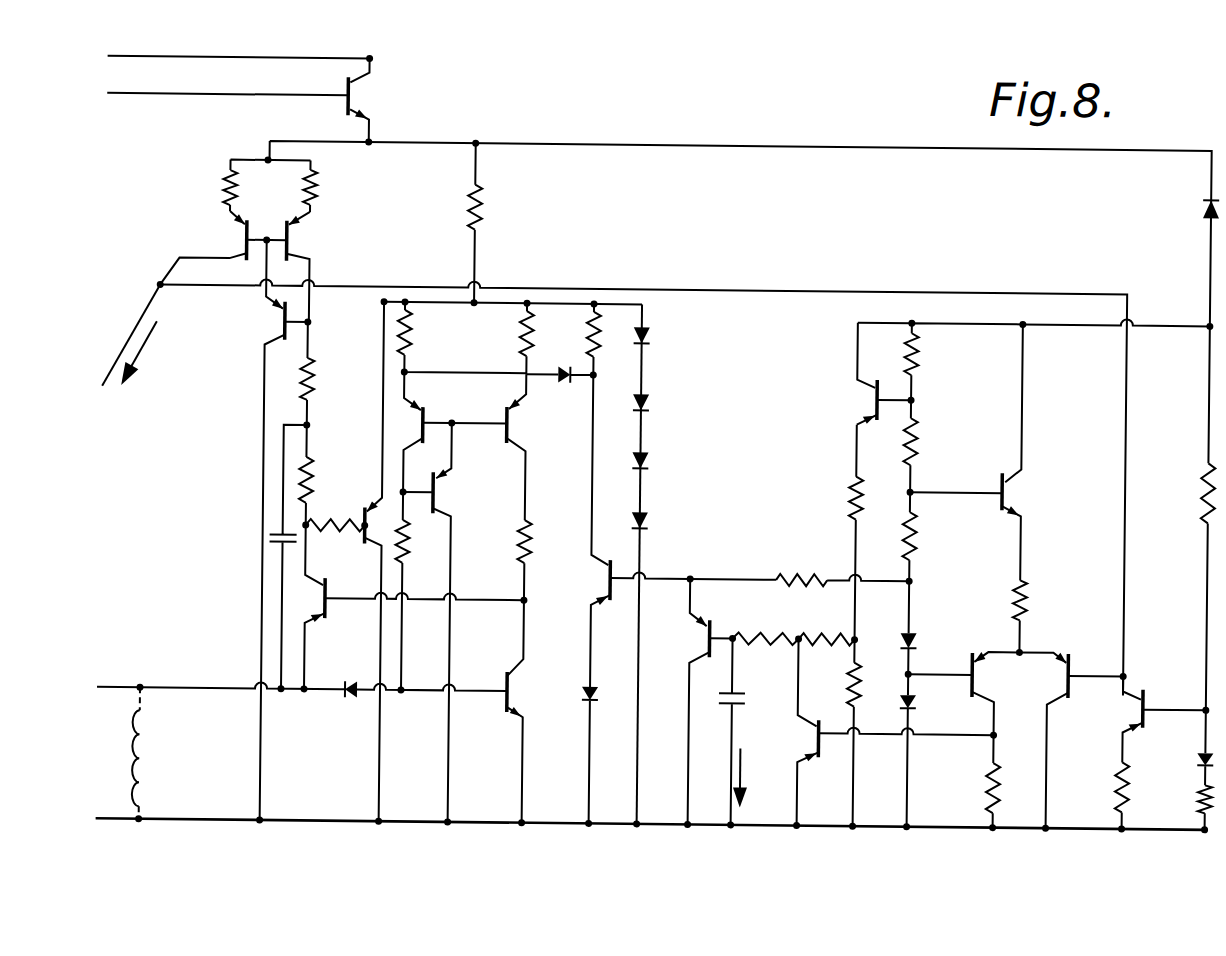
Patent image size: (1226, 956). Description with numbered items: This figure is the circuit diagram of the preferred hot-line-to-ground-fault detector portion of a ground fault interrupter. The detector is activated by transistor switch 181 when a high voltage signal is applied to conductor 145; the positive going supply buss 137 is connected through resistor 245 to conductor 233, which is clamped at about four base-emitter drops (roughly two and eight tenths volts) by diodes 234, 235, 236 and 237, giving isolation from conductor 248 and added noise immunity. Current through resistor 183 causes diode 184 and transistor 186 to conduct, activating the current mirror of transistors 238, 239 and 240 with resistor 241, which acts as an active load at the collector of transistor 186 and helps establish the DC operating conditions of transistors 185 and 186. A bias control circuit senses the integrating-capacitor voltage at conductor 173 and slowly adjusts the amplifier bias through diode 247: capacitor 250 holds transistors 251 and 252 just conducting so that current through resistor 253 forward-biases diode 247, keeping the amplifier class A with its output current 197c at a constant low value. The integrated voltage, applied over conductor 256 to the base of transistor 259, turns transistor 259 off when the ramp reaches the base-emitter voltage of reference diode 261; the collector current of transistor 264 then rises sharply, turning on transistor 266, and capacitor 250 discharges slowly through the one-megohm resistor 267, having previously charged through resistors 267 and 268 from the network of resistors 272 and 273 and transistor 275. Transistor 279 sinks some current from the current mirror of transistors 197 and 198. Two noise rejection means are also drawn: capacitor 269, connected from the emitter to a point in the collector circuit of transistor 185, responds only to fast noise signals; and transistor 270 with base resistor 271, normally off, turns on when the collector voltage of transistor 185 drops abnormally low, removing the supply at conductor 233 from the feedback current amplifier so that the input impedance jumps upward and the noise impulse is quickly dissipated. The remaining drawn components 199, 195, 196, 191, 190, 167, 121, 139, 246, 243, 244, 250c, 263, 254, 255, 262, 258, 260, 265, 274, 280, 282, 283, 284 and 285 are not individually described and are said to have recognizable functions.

The positive going supply buss 137 is at (202, 66).
The conductor 145 is at (238, 100).
The transistor switch 181 is at (370, 100).
The conductor 248 is at (852, 142).
The resistor 199 is at (224, 194).
The transistor 198 is at (312, 198).
The transistor 197 is at (240, 242).
The transistor 195 is at (290, 244).
The conductor 173 is at (130, 342).
The output current 197c is at (145, 350).
The conductor 256 is at (786, 292).
The transistor 196 is at (282, 328).
The resistor 191 is at (310, 390).
The capacitor 269 is at (268, 542).
The resistor 190 is at (314, 470).
The base resistor 271 is at (372, 512).
The transistor 270 is at (380, 494).
The transistor 185 is at (340, 592).
The line 167 is at (232, 668).
The diode 184 is at (350, 700).
The inductor 121 is at (150, 745).
The ground line 139 is at (232, 802).
The resistor 245 is at (482, 212).
The resistor 183 is at (410, 336).
The resistor 241 is at (520, 348).
The diode 247 is at (565, 382).
The resistor 253 is at (592, 338).
The transistor 252 is at (608, 576).
The diode 246 is at (620, 676).
The conductor 233 is at (646, 321).
The diode 234 is at (650, 340).
The diode 235 is at (650, 407).
The diode 236 is at (650, 465).
The diode 237 is at (650, 525).
The transistor 238 is at (428, 414).
The transistor 239 is at (512, 432).
The resistor 243 is at (428, 591).
The resistor 244 is at (518, 556).
The transistor 240 is at (436, 494).
The transistor 186 is at (512, 696).
The transistor 251 is at (710, 639).
The resistor 267 is at (768, 622).
The resistor 268 is at (836, 622).
The capacitor 250 is at (760, 697).
The discharge current arrow 250c is at (745, 772).
The transistor 266 is at (818, 740).
The resistor 272 is at (854, 676).
The resistor 263 is at (800, 577).
The resistor 273 is at (852, 492).
The transistor 275 is at (872, 398).
The resistor 254 is at (918, 355).
The resistor 255 is at (918, 448).
The transistor 262 is at (1006, 484).
The resistor 258 is at (918, 547).
The diode 260 is at (948, 634).
The reference diode 261 is at (914, 706).
The resistor 265 is at (1028, 598).
The transistor 264 is at (974, 693).
The transistor 259 is at (1090, 656).
The resistor 274 is at (990, 776).
The transistor 279 is at (1160, 690).
The resistor 280 is at (1118, 778).
The resistor 283 is at (1202, 486).
The diode 284 is at (1200, 756).
The resistor 285 is at (1200, 796).
The diode 282 is at (1202, 210).